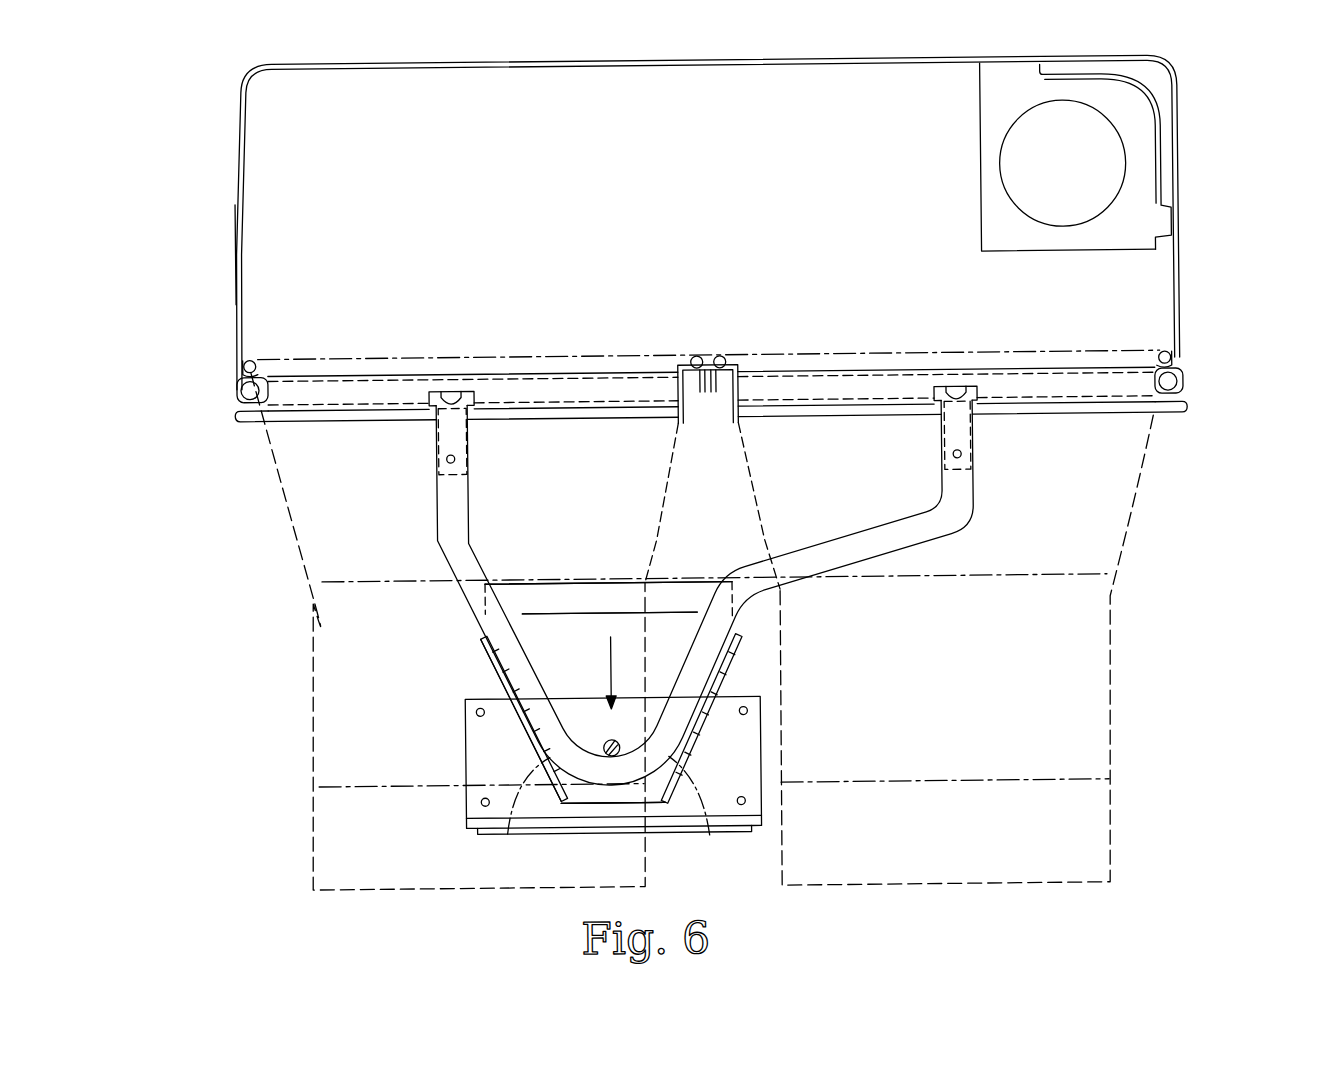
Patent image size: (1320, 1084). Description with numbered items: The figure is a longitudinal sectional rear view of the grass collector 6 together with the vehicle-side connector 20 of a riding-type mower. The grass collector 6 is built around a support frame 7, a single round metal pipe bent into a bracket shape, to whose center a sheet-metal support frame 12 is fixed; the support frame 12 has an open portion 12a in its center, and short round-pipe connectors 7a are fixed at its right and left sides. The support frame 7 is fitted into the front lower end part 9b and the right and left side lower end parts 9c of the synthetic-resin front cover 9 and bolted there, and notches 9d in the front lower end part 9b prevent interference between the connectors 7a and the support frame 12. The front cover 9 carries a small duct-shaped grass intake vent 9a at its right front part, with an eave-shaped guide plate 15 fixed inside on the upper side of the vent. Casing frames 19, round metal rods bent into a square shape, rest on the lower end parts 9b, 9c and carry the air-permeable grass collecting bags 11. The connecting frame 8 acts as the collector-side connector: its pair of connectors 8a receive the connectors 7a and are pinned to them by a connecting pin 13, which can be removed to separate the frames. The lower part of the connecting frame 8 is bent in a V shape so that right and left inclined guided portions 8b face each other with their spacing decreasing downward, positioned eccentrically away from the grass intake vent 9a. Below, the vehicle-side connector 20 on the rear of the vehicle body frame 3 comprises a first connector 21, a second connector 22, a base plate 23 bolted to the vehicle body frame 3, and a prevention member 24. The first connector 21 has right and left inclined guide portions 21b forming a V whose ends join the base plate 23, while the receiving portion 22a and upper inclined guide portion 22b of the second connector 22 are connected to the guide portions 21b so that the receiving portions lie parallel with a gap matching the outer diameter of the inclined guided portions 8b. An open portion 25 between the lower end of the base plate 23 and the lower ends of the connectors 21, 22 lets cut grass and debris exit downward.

The vehicle body frame 3 is at (748, 823).
The grass collector 6 is at (236, 208).
The support frame 7 is at (237, 393).
The connectors 7a is at (470, 445).
The connecting frame 8 is at (862, 533).
The connectors 8a is at (453, 492).
The inclined guided portions 8b is at (492, 627).
The front cover 9 is at (240, 117).
The grass intake vent 9a is at (1020, 163).
The front lower end part 9b is at (590, 412).
The side lower end parts 9c is at (236, 424).
The notches 9d is at (452, 397).
The grass collecting bags 11 is at (310, 712).
The support frame 12 is at (688, 383).
The open portion 12a is at (706, 392).
The connecting pin 13 is at (446, 458).
The guide plate 15 is at (1183, 140).
The casing frames 19 is at (255, 358).
The vehicle-side connector 20 is at (533, 736).
The first connector 21 is at (613, 802).
The inclined guide portions 21b is at (560, 806).
The second connector 22 is at (608, 583).
The receiving portion 22a is at (560, 655).
The upper inclined guide portion 22b is at (568, 598).
The base plate 23 is at (742, 739).
The prevention member 24 is at (600, 742).
The open portion 25 is at (606, 812).